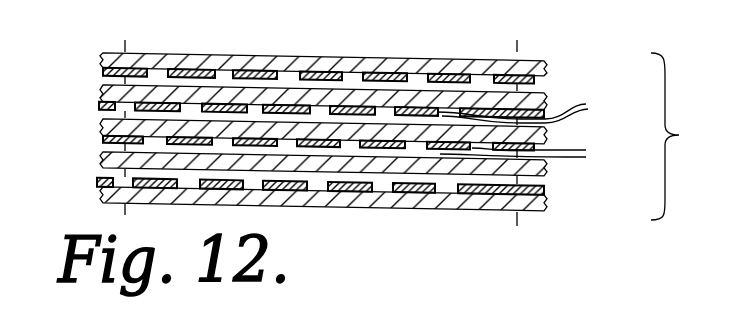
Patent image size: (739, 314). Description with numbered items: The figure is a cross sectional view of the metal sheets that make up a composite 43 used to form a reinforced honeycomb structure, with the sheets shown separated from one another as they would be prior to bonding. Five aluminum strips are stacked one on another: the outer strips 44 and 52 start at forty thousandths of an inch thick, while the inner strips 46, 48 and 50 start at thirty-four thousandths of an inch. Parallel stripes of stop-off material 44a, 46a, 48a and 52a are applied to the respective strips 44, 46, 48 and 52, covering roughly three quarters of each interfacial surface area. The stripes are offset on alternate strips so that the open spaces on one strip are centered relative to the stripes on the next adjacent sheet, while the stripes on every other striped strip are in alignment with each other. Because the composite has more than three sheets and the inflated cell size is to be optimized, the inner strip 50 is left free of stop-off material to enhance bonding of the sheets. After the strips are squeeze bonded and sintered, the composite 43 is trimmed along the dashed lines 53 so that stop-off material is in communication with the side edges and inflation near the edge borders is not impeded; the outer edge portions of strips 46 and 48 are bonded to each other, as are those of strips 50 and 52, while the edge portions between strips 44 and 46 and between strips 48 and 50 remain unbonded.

The composite 43 is at (430, 59).
The strip 44 is at (163, 54).
The stripes of stop-off material 44a is at (375, 79).
The strip 46 is at (100, 94).
The stripes of stop-off material 46a is at (359, 110).
The strip 48 is at (100, 128).
The stripes of stop-off material 48a is at (362, 150).
The strip 50 is at (100, 159).
The strip 52 is at (100, 194).
The stripes of stop-off material 52a is at (464, 196).
The dashed lines 53 is at (123, 42).